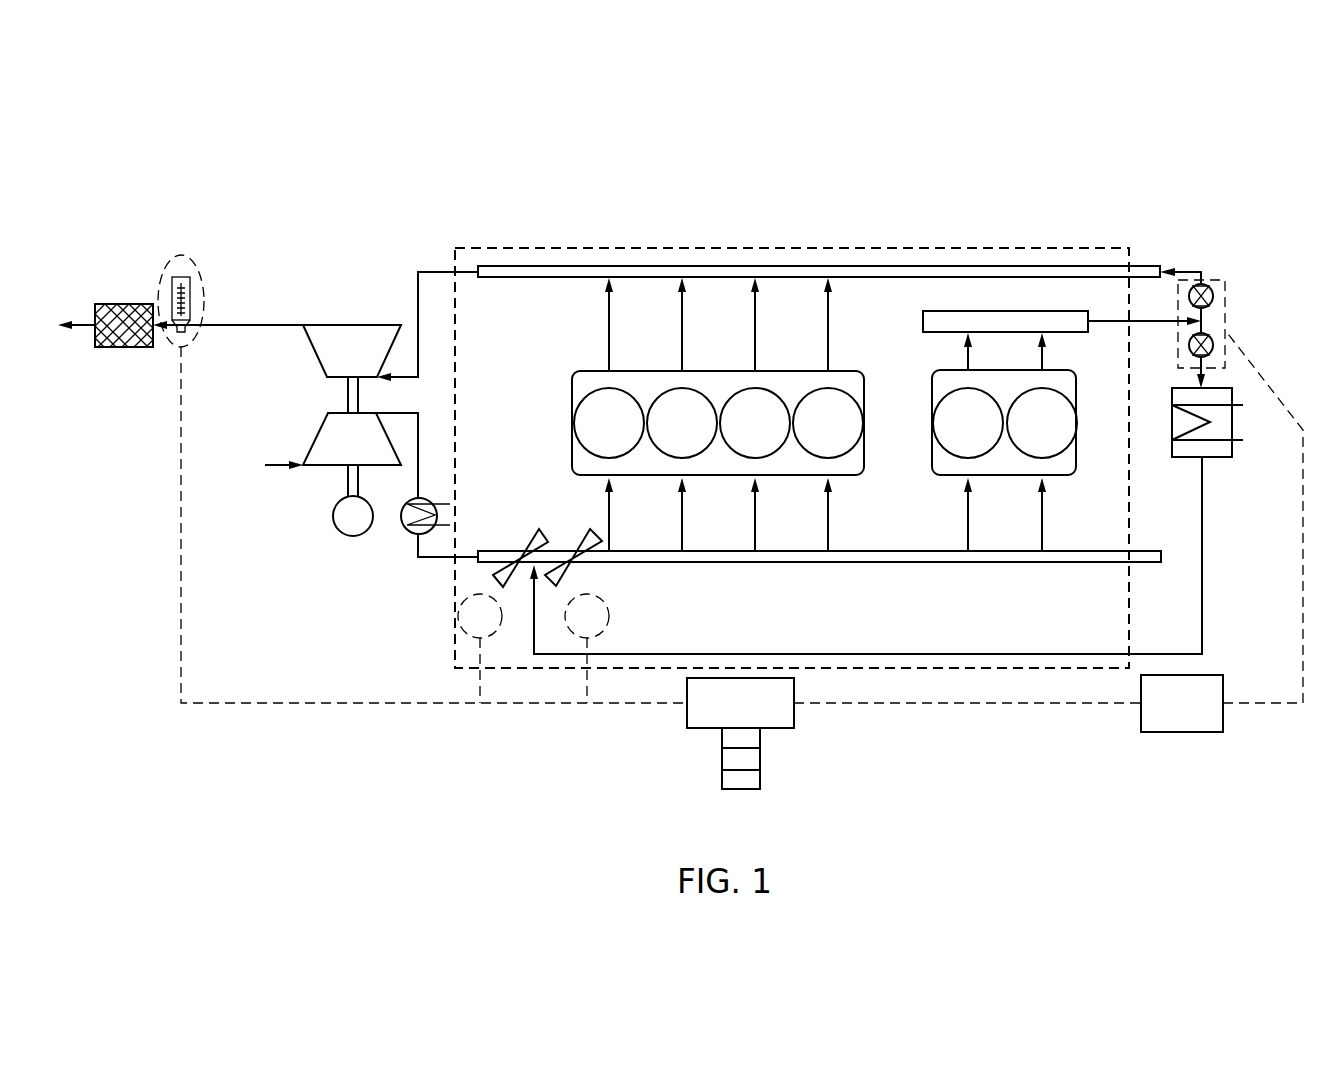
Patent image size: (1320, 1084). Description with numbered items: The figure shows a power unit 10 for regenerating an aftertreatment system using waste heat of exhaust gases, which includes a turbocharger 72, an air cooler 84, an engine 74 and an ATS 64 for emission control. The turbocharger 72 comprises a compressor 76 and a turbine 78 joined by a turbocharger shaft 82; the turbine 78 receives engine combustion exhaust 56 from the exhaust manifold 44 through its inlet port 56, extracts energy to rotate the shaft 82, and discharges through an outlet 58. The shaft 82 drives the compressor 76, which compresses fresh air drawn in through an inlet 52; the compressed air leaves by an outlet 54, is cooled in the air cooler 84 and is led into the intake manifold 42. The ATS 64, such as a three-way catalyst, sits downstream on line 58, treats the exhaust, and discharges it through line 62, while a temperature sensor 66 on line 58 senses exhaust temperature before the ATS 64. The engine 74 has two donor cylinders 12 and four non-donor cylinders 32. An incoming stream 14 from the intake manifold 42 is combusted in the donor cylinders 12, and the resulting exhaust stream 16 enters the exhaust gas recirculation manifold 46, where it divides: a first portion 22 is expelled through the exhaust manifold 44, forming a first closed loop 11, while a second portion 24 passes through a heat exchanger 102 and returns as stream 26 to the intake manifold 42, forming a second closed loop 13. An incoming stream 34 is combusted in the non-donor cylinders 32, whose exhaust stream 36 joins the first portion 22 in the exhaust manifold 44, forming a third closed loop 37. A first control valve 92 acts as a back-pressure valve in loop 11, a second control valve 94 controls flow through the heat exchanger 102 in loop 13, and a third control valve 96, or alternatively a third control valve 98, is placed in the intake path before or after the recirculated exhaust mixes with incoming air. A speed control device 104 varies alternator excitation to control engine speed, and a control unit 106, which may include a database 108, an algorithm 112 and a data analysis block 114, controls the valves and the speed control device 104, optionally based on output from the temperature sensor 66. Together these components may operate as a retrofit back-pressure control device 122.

The power unit 10 is at (1212, 150).
The first closed loop 11 is at (1012, 284).
The donor cylinders 12 is at (932, 410).
The second closed loop 13 is at (1118, 412).
The incoming stream 14 is at (1044, 504).
The exhaust stream 16 is at (1040, 352).
The first portion 22 is at (1201, 270).
The second portion 24 is at (1180, 366).
The stream 26 is at (1201, 505).
The non-donor cylinders 32 is at (572, 400).
The incoming stream 34 is at (826, 505).
The exhaust stream 36 is at (826, 323).
The third closed loop 37 is at (872, 298).
The intake manifold 42 is at (875, 565).
The exhaust manifold 44 is at (770, 266).
The exhaust gas recirculation manifold 46 is at (975, 311).
The inlet 52 is at (265, 467).
The outlet 54 is at (418, 465).
The inlet port 56 is at (418, 355).
The outlet 58 is at (262, 325).
The line 62 is at (78, 322).
The ATS 64 is at (125, 304).
The temperature sensor 66 is at (195, 272).
The turbocharger 72 is at (243, 457).
The engine 74 is at (583, 248).
The compressor 76 is at (315, 440).
The turbine 78 is at (352, 325).
The turbocharger shaft 82 is at (348, 398).
The air cooler 84 is at (407, 532).
The first control valve 92 is at (1213, 296).
The second control valve 94 is at (1189, 346).
The third control valve 96 is at (498, 573).
The third control valve 98 is at (562, 573).
The heat exchanger 102 is at (1220, 460).
The speed control device 104 is at (1182, 703).
The control unit 106 is at (740, 703).
The database 108 is at (760, 740).
The algorithm 112 is at (722, 755).
The data analysis block 114 is at (760, 778).
The retrofit back-pressure control device 122 is at (978, 703).